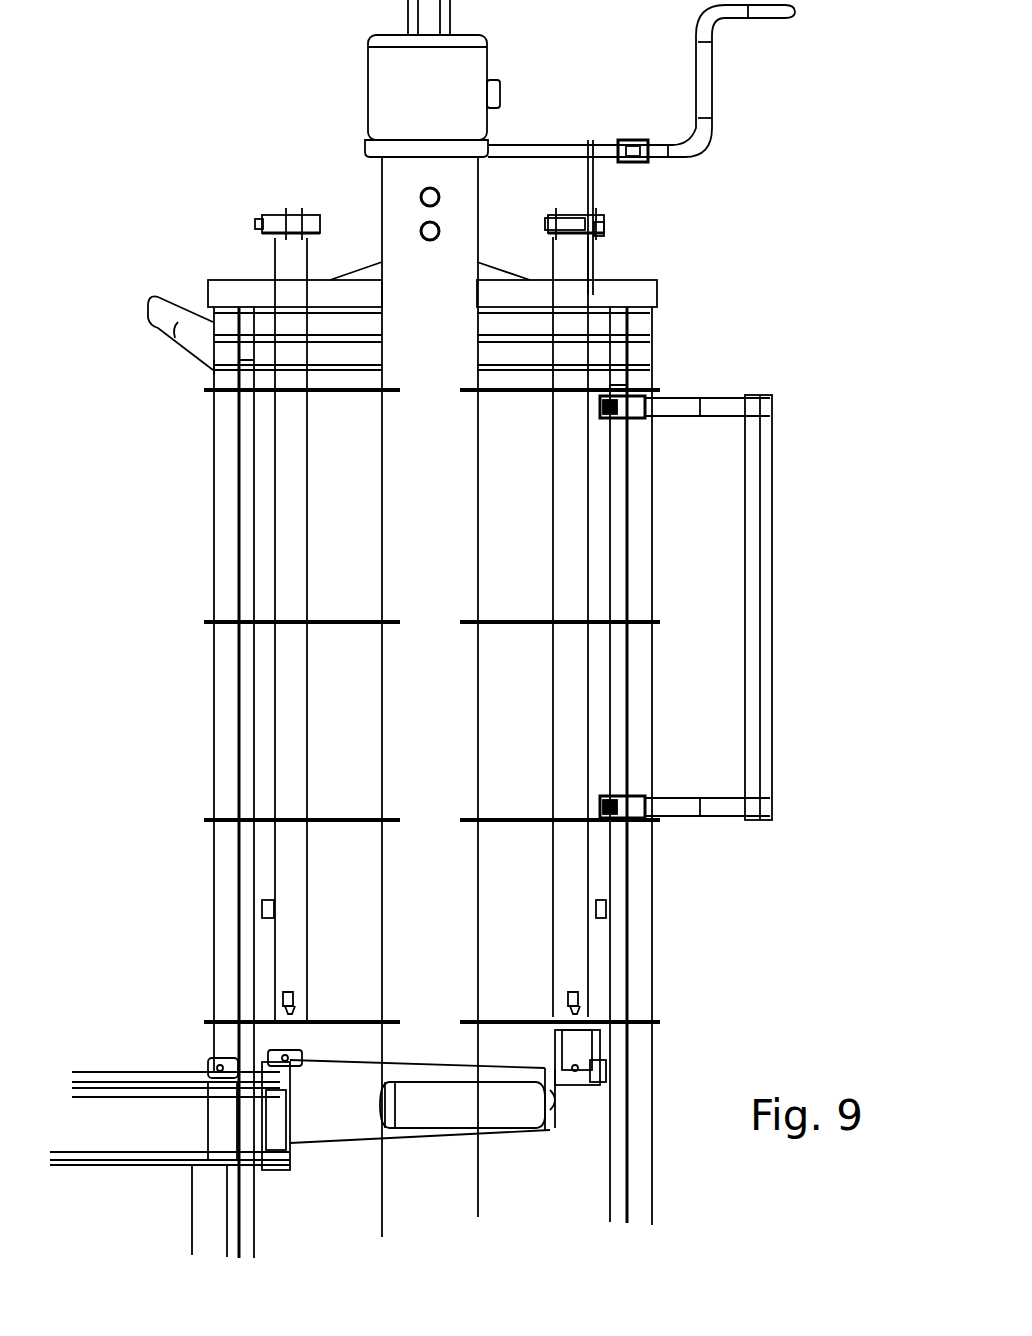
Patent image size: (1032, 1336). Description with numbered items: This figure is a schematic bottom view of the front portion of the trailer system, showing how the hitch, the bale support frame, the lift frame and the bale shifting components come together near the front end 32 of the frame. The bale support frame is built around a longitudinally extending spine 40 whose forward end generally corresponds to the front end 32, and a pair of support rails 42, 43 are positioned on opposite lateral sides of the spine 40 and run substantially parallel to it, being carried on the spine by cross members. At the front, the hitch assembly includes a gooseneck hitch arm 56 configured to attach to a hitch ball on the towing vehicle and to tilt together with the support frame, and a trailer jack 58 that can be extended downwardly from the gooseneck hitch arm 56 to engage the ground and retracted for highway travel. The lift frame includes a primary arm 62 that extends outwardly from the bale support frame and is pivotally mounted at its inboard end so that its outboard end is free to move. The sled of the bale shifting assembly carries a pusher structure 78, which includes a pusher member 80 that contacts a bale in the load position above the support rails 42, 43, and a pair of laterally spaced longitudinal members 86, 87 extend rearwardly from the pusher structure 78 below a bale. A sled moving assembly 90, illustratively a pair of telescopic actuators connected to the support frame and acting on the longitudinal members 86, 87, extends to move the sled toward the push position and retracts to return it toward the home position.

The gooseneck hitch arm 56 is at (452, 20).
The trailer jack 58 is at (390, 125).
The front end 32 is at (400, 175).
The spine 40 is at (452, 574).
The pusher structure 78 is at (528, 345).
The sled moving assembly 90 is at (575, 353).
The pusher member 80 is at (178, 340).
The support rail 43 is at (228, 750).
The support rail 42 is at (636, 948).
The primary arm 62 is at (128, 1122).
The longitudinal member 87 is at (273, 1045).
The longitudinal member 86 is at (596, 1068).